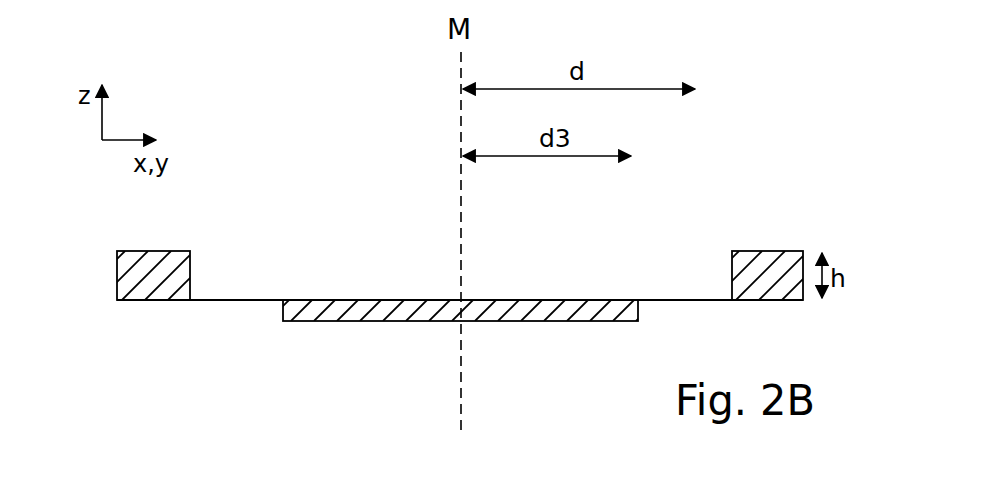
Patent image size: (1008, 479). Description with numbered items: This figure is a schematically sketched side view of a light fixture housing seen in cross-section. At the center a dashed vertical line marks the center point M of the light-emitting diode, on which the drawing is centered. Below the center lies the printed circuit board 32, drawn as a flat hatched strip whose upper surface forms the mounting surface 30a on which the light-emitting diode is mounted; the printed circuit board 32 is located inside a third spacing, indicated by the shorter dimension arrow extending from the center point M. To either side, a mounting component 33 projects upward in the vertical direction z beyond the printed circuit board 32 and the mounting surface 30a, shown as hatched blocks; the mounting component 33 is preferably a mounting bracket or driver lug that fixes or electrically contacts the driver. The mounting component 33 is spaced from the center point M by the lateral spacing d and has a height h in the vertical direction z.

The mounting surface 30a is at (302, 296).
The printed circuit board 32 is at (517, 312).
The mounting component 33 is at (770, 268).